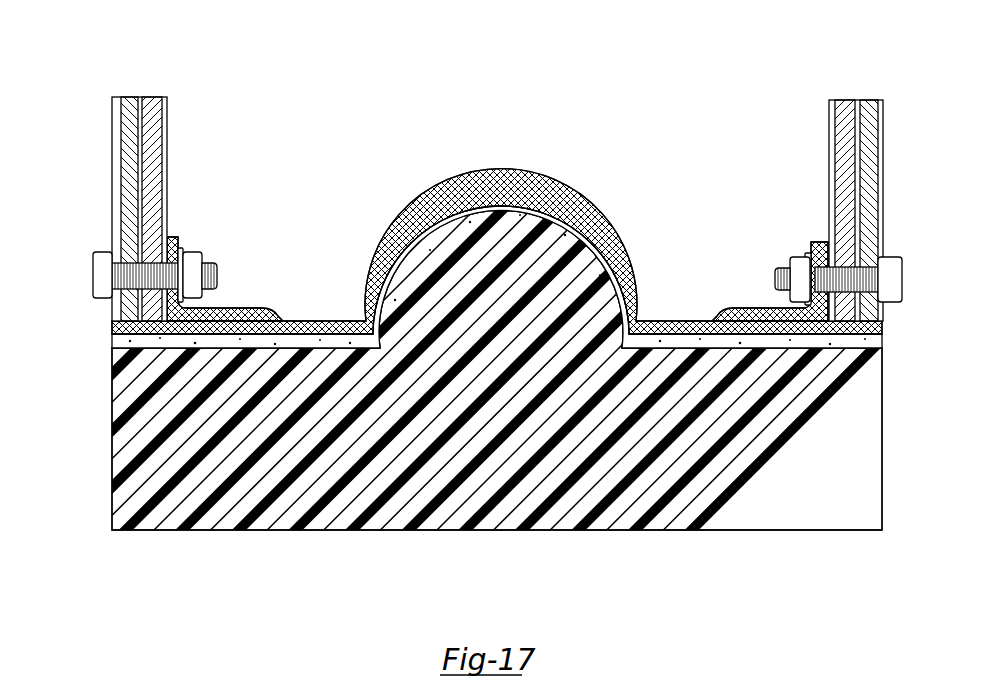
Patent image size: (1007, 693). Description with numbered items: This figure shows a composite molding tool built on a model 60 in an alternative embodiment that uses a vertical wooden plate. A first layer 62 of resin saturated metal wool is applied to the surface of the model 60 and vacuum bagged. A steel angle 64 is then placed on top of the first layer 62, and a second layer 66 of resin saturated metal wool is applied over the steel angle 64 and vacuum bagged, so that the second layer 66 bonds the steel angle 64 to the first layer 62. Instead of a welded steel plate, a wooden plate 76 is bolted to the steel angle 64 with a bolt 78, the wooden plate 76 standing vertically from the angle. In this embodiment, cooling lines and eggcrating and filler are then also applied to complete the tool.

The model 60 is at (285, 580).
The first layer 62 is at (118, 341).
The steel angle 64 is at (188, 245).
The second layer 66 is at (390, 255).
The wooden plate 76 is at (152, 118).
The bolt 78 is at (97, 272).